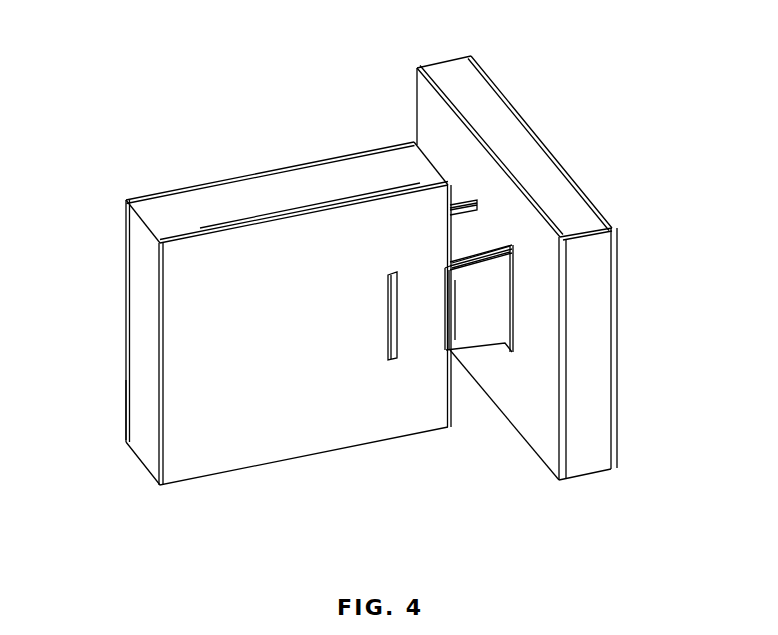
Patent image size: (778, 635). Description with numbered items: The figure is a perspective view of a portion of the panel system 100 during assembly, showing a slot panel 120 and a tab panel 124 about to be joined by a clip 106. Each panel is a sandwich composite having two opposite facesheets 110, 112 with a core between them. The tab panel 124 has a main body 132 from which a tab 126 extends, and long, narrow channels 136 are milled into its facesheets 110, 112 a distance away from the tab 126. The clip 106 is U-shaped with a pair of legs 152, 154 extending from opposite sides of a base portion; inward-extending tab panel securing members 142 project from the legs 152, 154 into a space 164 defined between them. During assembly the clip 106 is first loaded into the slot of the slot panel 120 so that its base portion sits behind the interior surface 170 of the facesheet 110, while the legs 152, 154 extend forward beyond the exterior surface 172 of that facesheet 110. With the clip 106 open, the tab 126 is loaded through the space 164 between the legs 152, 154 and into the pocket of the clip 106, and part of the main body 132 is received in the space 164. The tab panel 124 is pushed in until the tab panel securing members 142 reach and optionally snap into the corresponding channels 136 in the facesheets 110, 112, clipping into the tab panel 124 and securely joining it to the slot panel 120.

The panel system 100 is at (195, 58).
The clip 106 is at (478, 320).
The facesheet 110 is at (289, 325).
The facesheet 112 is at (151, 196).
The slot panel 120 is at (559, 268).
The tab panel 124 is at (120, 380).
The tab 126 is at (490, 263).
The main body 132 is at (390, 172).
The channel 136 is at (383, 335).
The tab panel securing member 142 is at (524, 305).
The leg 152 is at (500, 246).
The leg 154 is at (455, 235).
The space 164 is at (487, 242).
The interior surface 170 is at (568, 330).
The exterior surface 172 is at (548, 352).